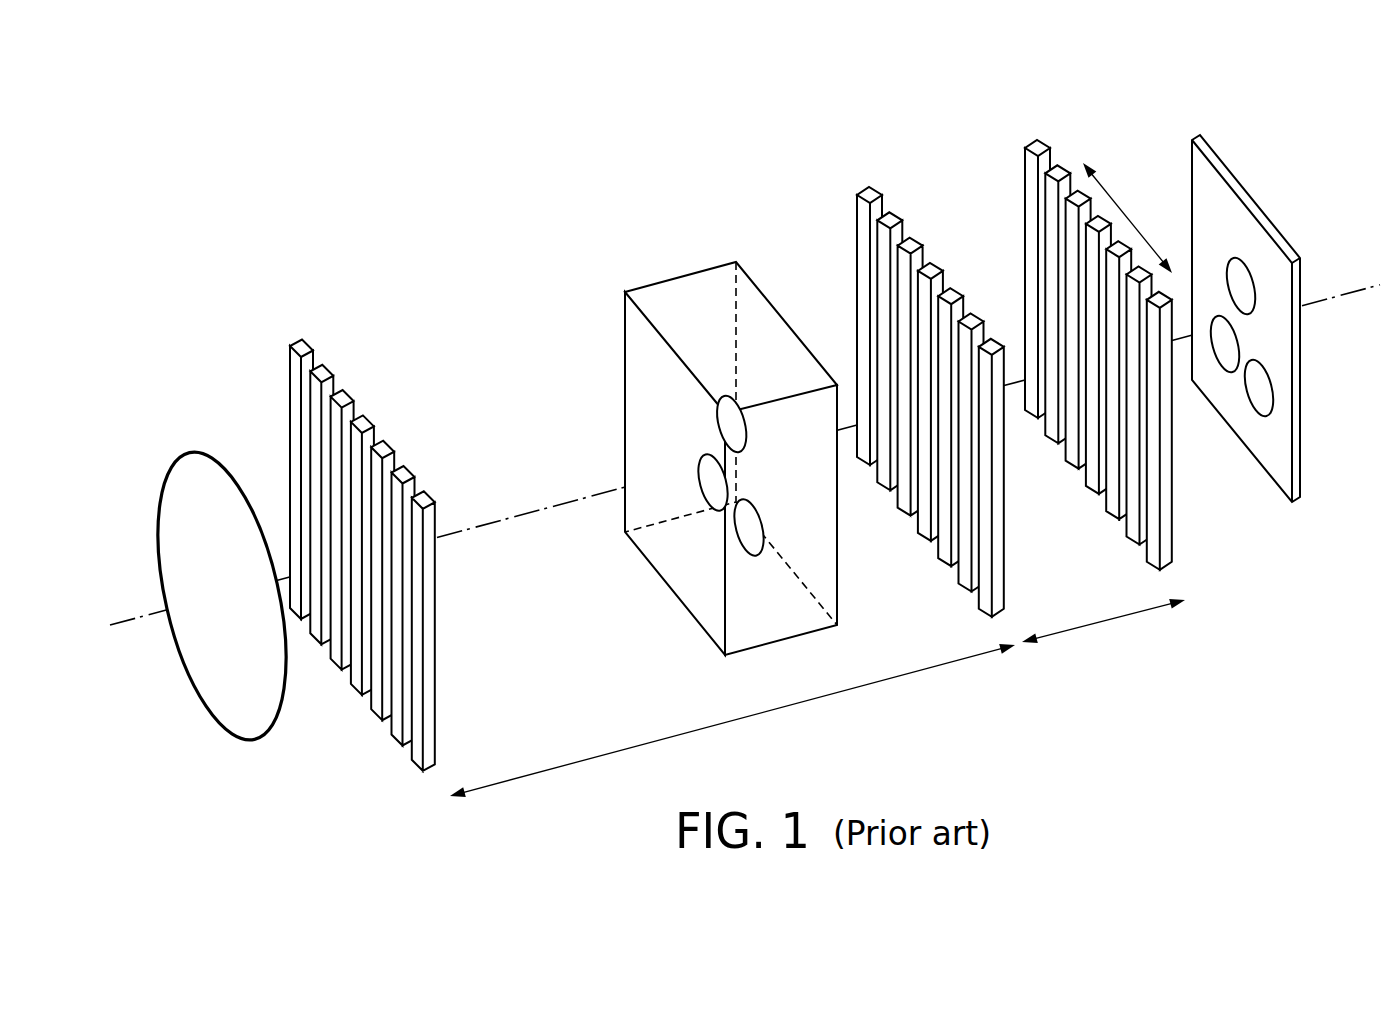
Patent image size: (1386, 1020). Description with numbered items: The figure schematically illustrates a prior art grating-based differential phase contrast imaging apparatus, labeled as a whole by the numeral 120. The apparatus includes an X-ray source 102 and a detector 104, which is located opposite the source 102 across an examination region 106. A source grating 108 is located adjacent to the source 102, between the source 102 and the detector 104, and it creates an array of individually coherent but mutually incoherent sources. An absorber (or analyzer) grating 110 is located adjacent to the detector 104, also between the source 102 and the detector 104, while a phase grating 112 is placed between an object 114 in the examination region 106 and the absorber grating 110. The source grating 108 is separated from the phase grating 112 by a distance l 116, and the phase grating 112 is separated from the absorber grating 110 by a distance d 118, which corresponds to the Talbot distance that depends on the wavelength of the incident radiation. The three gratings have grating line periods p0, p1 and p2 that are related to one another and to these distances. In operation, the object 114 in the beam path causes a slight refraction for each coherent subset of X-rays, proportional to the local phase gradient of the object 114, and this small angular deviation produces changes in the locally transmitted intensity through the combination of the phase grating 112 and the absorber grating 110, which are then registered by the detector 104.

The X-ray source 102 is at (190, 452).
The detector 104 is at (1248, 193).
The examination region 106 is at (672, 432).
The source grating 108 is at (300, 338).
The absorber grating 110 is at (1030, 147).
The phase grating 112 is at (864, 187).
The object 114 is at (625, 365).
The distance l 116 is at (595, 757).
The distance d 118 is at (1102, 622).
The prior art optical system 120 is at (188, 172).